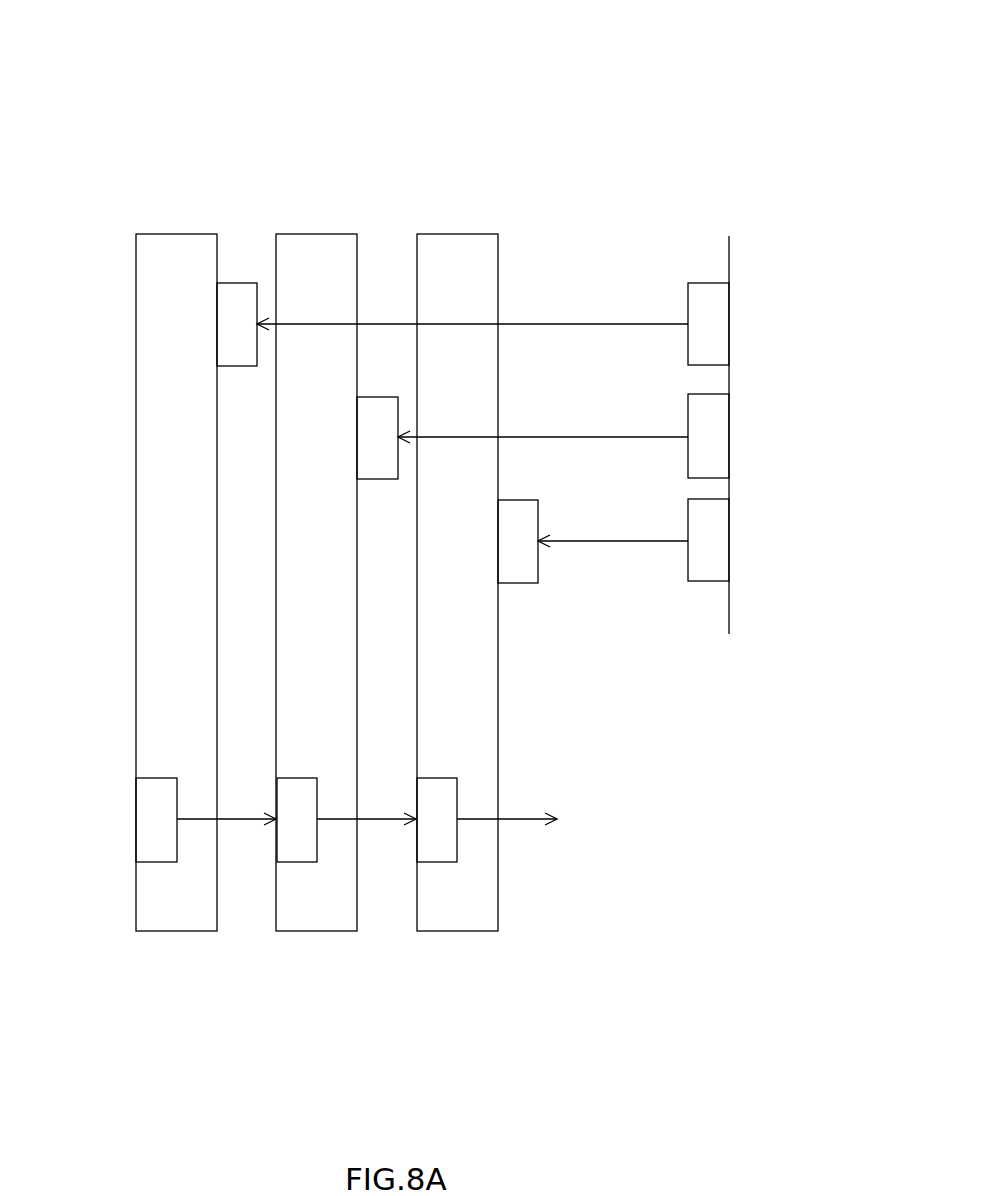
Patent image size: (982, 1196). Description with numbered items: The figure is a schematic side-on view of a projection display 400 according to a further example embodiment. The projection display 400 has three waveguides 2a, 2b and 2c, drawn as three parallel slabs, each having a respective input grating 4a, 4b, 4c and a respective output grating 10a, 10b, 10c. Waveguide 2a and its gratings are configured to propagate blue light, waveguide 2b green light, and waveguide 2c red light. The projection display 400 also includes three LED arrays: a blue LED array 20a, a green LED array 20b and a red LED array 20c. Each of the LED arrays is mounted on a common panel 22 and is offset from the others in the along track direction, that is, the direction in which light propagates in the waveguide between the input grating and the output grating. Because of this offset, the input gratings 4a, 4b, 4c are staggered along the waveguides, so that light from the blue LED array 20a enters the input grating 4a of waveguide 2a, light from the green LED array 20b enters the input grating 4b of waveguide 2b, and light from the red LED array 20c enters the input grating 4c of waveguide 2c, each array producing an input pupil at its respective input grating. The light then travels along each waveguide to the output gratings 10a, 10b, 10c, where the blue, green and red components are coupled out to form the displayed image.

The projection display 400 is at (119, 110).
The waveguide 2a is at (457, 234).
The waveguide 2b is at (317, 234).
The waveguide 2c is at (155, 234).
The input grating 4a is at (513, 500).
The input grating 4b is at (377, 397).
The input grating 4c is at (238, 283).
The output grating 10a is at (435, 842).
The output grating 10b is at (290, 840).
The output grating 10c is at (147, 838).
The blue LED array 20a is at (730, 539).
The green LED array 20b is at (730, 436).
The red LED array 20c is at (730, 325).
The panel 22 is at (730, 607).